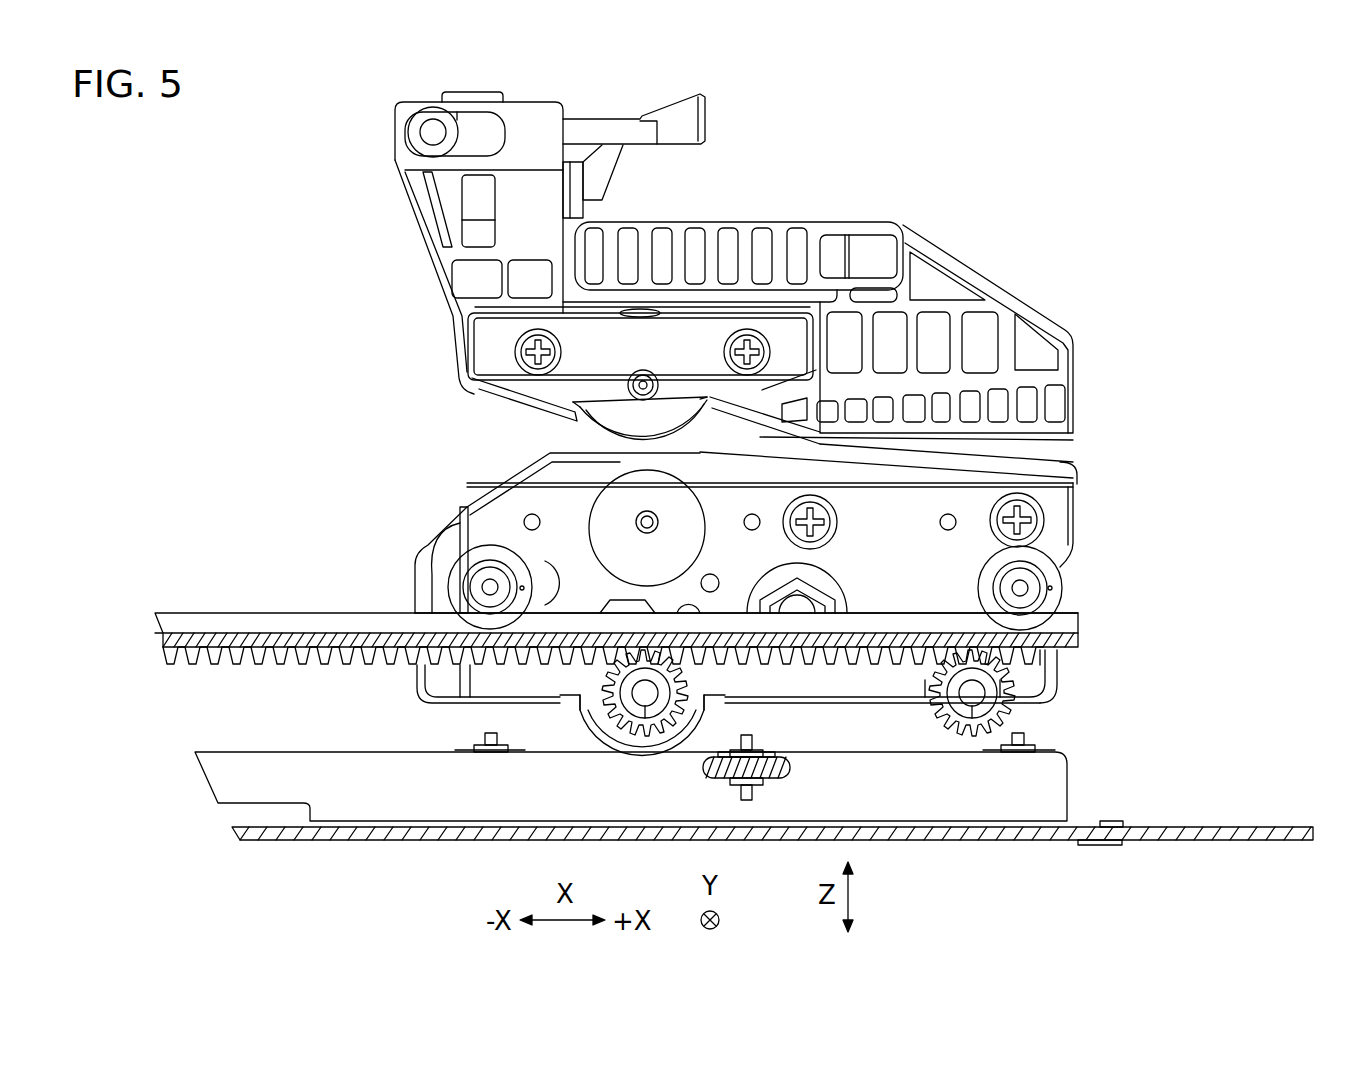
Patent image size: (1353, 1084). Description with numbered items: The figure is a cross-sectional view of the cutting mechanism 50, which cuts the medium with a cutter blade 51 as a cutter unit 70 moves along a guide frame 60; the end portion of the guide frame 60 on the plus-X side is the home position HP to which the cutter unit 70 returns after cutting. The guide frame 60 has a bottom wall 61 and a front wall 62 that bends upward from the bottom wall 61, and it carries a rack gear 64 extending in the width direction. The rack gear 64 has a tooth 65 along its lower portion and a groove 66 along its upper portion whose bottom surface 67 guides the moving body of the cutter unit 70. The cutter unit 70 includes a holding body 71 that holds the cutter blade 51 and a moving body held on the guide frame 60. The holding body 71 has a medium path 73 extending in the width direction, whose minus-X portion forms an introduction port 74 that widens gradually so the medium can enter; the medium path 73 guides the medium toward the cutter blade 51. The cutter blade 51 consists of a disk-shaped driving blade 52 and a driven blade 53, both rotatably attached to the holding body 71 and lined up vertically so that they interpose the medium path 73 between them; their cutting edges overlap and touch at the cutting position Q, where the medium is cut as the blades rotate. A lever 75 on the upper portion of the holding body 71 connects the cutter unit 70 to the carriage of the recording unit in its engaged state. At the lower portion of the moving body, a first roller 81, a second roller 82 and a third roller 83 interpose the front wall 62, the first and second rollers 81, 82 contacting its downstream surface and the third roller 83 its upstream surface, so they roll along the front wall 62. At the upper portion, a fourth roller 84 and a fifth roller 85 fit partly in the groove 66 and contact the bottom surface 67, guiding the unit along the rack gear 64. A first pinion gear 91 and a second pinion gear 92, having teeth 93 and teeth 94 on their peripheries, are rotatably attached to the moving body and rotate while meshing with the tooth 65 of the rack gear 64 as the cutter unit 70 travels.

The cutting mechanism 50 is at (1110, 188).
The cutter blade 51 is at (616, 394).
The driving blade 52 is at (690, 437).
The driven blade 53 is at (622, 440).
The guide frame 60 is at (1172, 791).
The bottom wall 61 is at (1147, 841).
The front wall 62 is at (1038, 803).
The rack gear 64 is at (1078, 640).
The tooth 65 is at (244, 666).
The groove 66 is at (330, 627).
The bottom surface 67 is at (272, 631).
The cutter unit 70 is at (958, 242).
The holding body 71 is at (930, 228).
The medium path 73 is at (576, 432).
The introduction port 74 is at (488, 417).
The lever 75 is at (705, 113).
The first roller 81 is at (1047, 748).
The second roller 82 is at (463, 747).
The third roller 83 is at (793, 765).
The fourth roller 84 is at (440, 556).
The fifth roller 85 is at (1064, 583).
The first pinion gear 91 is at (668, 735).
The second pinion gear 92 is at (988, 735).
The teeth 93 is at (623, 745).
The teeth 94 is at (943, 735).
The cutting position Q is at (617, 443).
The home position HP is at (1145, 412).